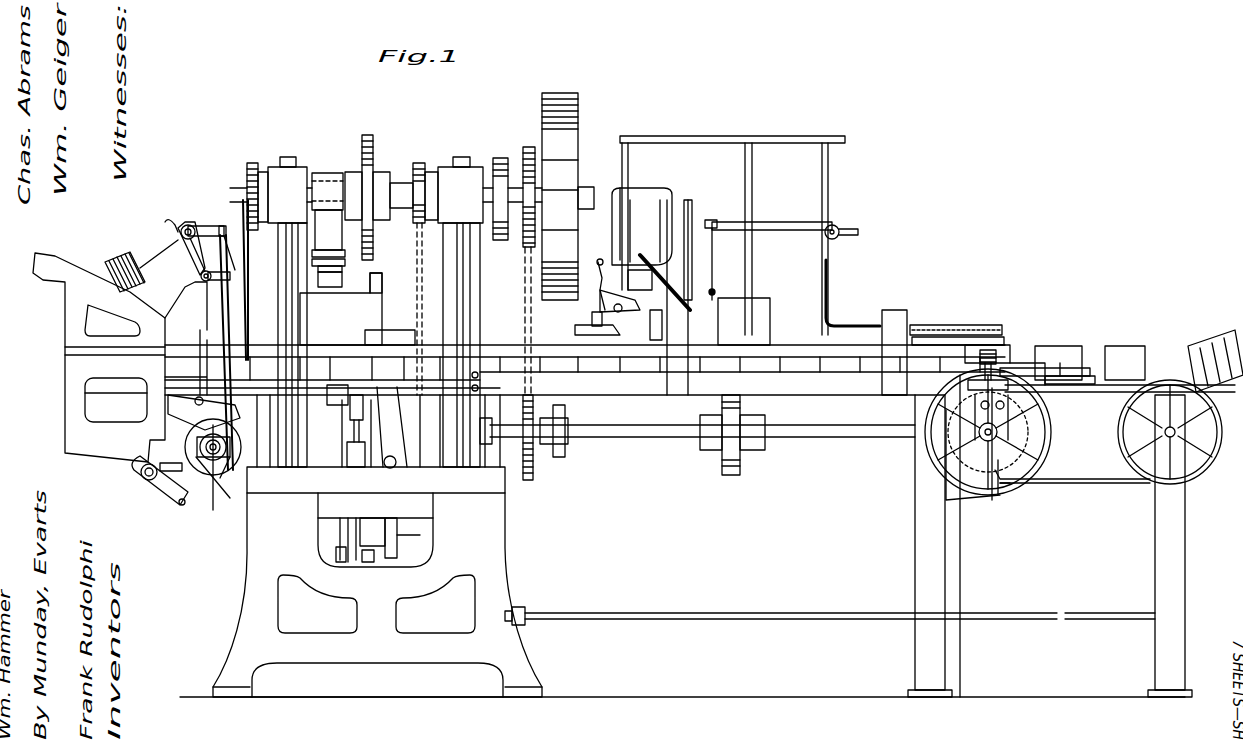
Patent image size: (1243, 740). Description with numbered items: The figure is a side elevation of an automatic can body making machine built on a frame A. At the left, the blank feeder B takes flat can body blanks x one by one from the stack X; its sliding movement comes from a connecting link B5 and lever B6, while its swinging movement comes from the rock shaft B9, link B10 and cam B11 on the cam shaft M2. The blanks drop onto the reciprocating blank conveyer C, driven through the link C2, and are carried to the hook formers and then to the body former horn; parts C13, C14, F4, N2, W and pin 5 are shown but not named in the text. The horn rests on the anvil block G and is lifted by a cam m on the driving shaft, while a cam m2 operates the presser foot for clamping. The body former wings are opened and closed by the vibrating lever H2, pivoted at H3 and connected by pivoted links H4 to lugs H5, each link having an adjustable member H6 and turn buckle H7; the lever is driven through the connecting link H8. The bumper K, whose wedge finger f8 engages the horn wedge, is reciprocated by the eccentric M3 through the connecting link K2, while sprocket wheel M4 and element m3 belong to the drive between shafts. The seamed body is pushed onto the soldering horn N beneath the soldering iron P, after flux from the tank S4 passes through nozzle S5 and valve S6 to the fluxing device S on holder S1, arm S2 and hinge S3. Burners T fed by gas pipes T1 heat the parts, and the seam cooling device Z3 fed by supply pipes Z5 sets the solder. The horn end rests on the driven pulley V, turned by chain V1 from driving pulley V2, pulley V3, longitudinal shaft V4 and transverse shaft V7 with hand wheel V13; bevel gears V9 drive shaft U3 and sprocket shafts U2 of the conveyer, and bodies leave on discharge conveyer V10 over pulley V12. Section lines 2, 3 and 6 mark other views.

The frame A is at (1155, 566).
The pivoted links H4 is at (345, 565).
The vibrating lever H2 is at (370, 563).
The pivot H3 is at (400, 547).
The blank conveyer C is at (176, 380).
The link C2 is at (203, 385).
The bracket C13 is at (188, 425).
The lever C14 is at (161, 480).
The cam B11 is at (226, 492).
The cam shaft M2 is at (206, 500).
The section line 2— 2 is at (222, 496).
The stack of blanks X is at (128, 262).
The blank feeder B is at (172, 259).
The rock shaft B9 is at (168, 226).
The lever B6 is at (202, 226).
The connecting link B5 is at (201, 292).
The link B10 is at (228, 338).
The cam m is at (252, 161).
The cam m2 is at (268, 165).
The hub m3 is at (328, 178).
The connecting link K2 is at (366, 237).
The sprocket wheel M4 is at (420, 161).
The sprocket chain M3 is at (380, 278).
The connecting link H8 is at (344, 283).
The bumper K is at (382, 328).
The soldering horn N is at (430, 300).
The driving pulley V2 is at (526, 150).
The rotary support pulley V is at (568, 196).
The chain V1 is at (514, 321).
The section line 3— 3 is at (520, 122).
The bed F4 is at (585, 370).
The wedge finger f8 is at (390, 329).
The anvil block G is at (337, 395).
The arms or lugs H5 is at (350, 410).
The adjustable member H6 is at (366, 432).
The turn buckle H7 is at (320, 470).
The pin 5 is at (205, 307).
The section line 6— 6 is at (259, 300).
The longitudinal shaft V4 is at (803, 437).
The pulley V3 is at (536, 466).
The gear W is at (700, 400).
The soldering iron P is at (703, 340).
The heaters or burners T is at (630, 160).
The gas supply pipes T1 is at (752, 178).
The tank S4 is at (666, 210).
The adjusting valve S6 is at (601, 258).
The arm S2 is at (629, 277).
The pipe or nozzle S5 is at (600, 294).
The fluxing device S is at (575, 330).
The holder or bar S1 is at (650, 315).
The hinge S3 is at (651, 328).
The supply pipes Z5 is at (830, 290).
The seam cooling device Z3 is at (918, 322).
The can body blank x is at (1147, 362).
The bracket N2 is at (968, 340).
The driving shaft of conveyer U3 is at (992, 345).
The sprocket wheels / upright shafts U2 is at (1008, 348).
The transverse shaft V7 is at (998, 432).
The bevel gears V9 is at (1040, 400).
The hand wheel V13 is at (1001, 490).
The discharge conveyer V10 is at (1102, 480).
The pulley V12 is at (1228, 440).